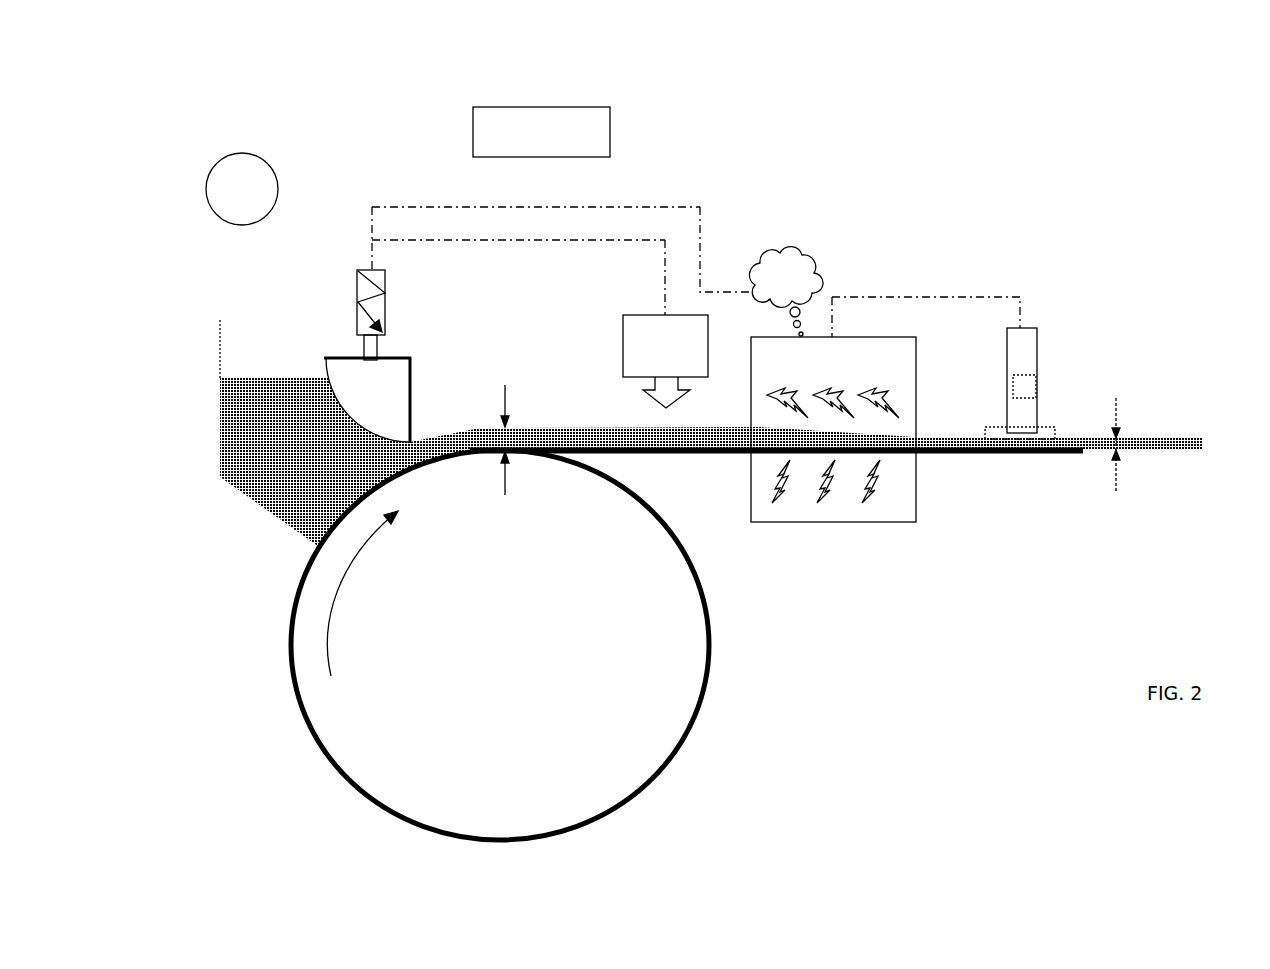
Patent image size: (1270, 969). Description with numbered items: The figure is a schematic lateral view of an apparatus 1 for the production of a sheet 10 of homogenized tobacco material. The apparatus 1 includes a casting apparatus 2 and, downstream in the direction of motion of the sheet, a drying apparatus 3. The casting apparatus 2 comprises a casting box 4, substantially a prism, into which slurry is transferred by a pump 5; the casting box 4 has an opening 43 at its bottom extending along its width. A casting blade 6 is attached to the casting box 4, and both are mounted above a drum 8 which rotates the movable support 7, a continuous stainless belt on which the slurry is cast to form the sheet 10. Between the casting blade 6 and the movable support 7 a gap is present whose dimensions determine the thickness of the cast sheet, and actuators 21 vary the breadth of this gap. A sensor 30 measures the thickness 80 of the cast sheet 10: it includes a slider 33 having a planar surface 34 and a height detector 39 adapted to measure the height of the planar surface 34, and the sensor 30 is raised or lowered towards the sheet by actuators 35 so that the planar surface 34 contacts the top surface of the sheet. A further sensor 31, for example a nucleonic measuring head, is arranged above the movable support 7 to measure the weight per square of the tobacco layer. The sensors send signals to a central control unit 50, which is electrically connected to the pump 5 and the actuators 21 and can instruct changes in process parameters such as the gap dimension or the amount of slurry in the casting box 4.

The apparatus for the production of a sheet of homogenized tobacco material 1 is at (821, 694).
The casting apparatus 2 is at (325, 220).
The drying apparatus 3 is at (854, 264).
The casting box 4 is at (214, 382).
The pump 5 is at (237, 178).
The casting blade 6 is at (390, 383).
The movable support 7 is at (970, 452).
The drum 8 is at (310, 663).
The sheet of homogenized tobacco material 10 is at (1190, 440).
The actuators 21 is at (385, 293).
The sensor 30 is at (1068, 361).
The further sensor 31 is at (700, 330).
The slider 33 is at (1047, 432).
The planar surface 34 is at (1020, 455).
The actuators 35 is at (1022, 342).
The height detector 39 is at (1022, 387).
The opening 43 is at (432, 445).
The central control unit 50 is at (585, 140).
The thickness 80 is at (1132, 445).